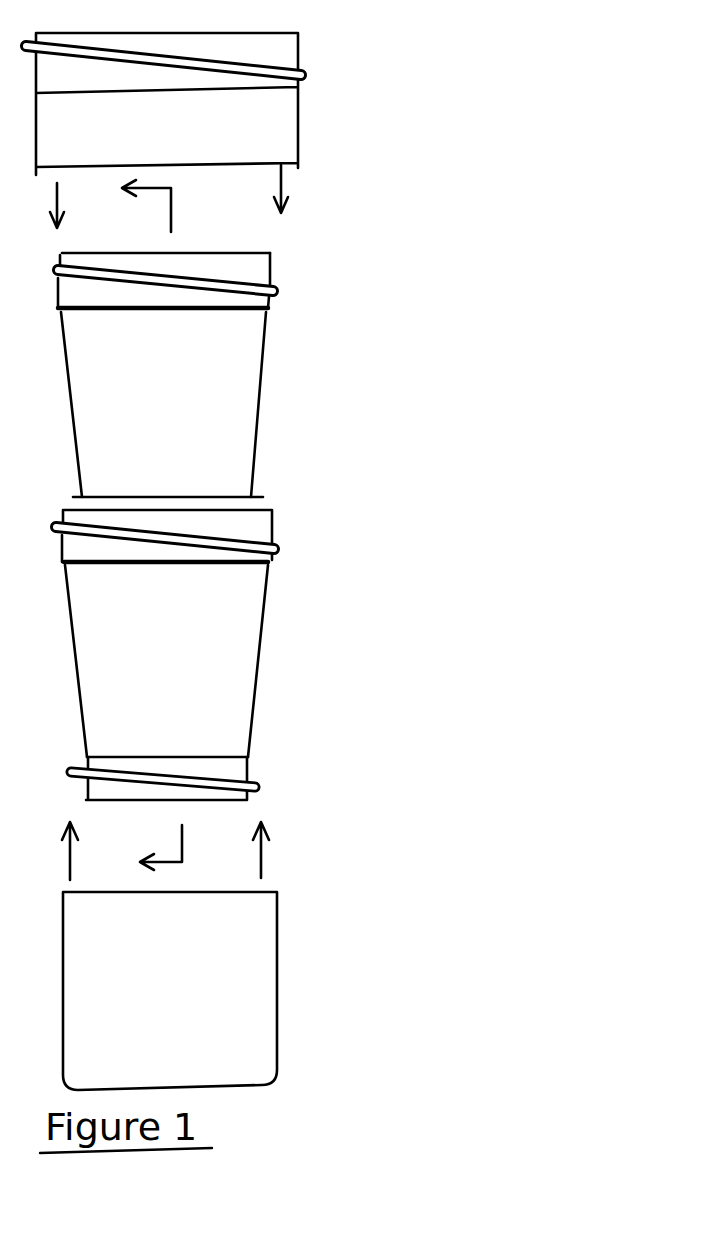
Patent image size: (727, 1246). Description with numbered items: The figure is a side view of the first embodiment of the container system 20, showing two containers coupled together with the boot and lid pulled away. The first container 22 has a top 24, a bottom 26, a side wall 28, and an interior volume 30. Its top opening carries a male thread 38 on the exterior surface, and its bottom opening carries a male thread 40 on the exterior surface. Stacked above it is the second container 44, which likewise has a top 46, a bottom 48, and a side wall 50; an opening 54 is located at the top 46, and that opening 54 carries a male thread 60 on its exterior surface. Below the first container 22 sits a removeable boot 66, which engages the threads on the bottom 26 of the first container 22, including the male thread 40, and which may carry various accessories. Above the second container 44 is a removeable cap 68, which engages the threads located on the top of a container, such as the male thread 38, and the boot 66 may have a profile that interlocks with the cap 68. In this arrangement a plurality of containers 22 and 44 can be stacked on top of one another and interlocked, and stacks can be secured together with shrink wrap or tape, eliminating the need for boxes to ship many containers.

The container system 20 is at (311, 545).
The first container 22 is at (220, 664).
The top 24 is at (274, 523).
The bottom 26 is at (250, 770).
The side wall 28 is at (255, 690).
The interior volume 30 is at (207, 618).
The male thread 38 is at (280, 542).
The male thread 40 is at (259, 790).
The second container 44 is at (225, 350).
The top 46 is at (273, 268).
The bottom 48 is at (228, 497).
The side wall 50 is at (262, 405).
The top opening 54 is at (236, 253).
The male thread 60 is at (279, 293).
The removeable boot 66 is at (277, 985).
The removeable cap 68 is at (270, 128).